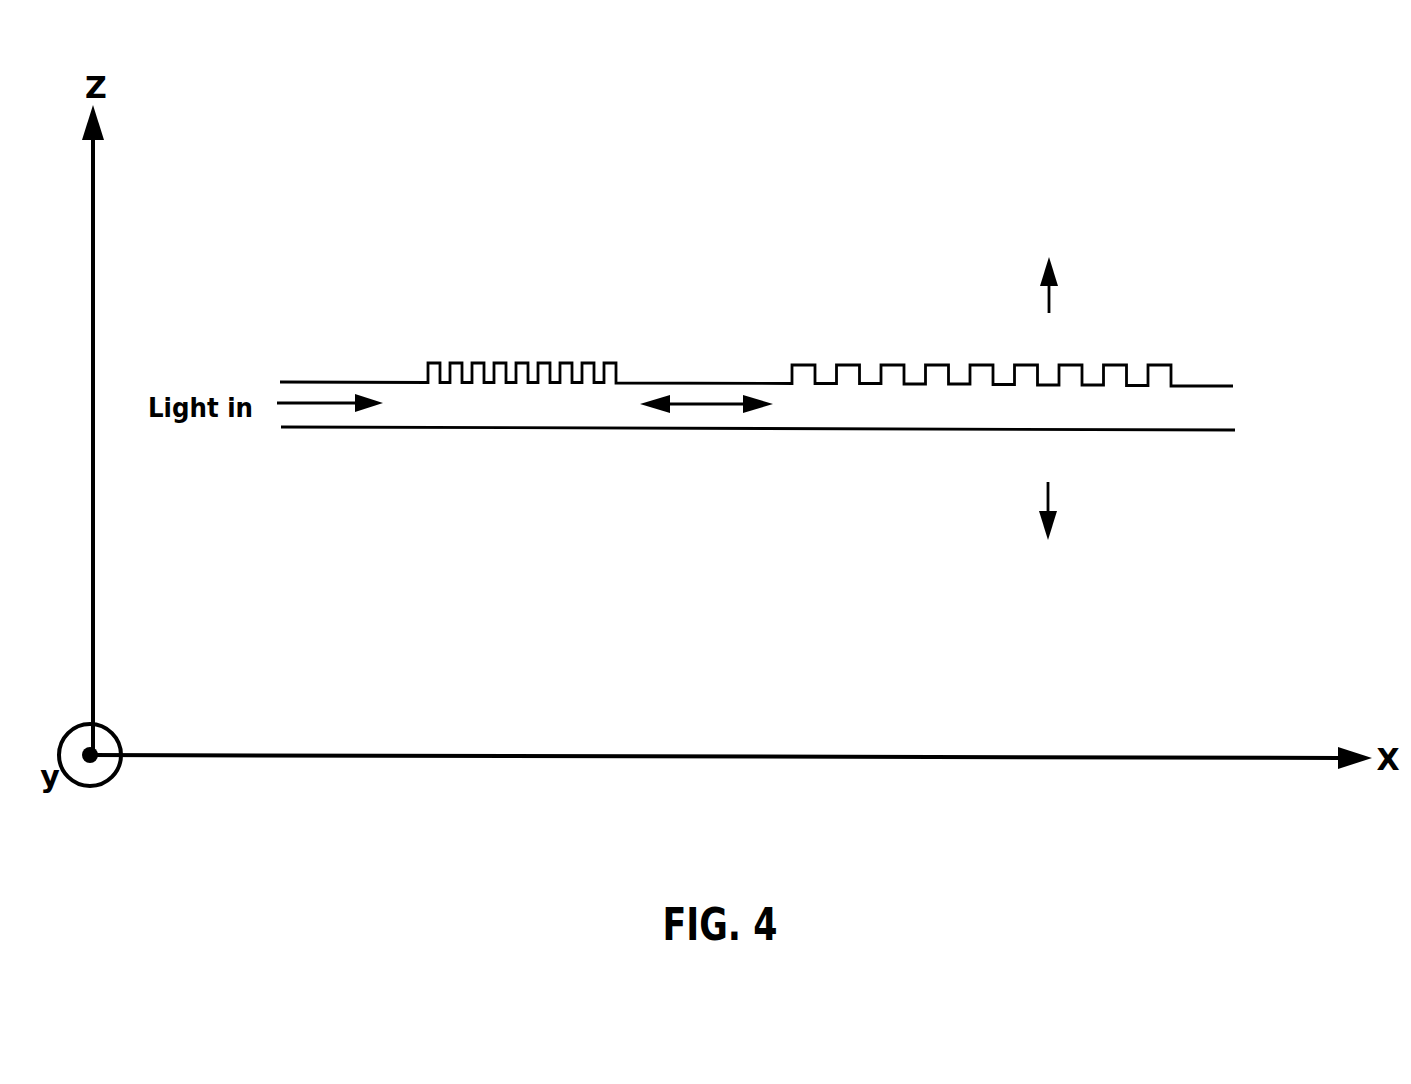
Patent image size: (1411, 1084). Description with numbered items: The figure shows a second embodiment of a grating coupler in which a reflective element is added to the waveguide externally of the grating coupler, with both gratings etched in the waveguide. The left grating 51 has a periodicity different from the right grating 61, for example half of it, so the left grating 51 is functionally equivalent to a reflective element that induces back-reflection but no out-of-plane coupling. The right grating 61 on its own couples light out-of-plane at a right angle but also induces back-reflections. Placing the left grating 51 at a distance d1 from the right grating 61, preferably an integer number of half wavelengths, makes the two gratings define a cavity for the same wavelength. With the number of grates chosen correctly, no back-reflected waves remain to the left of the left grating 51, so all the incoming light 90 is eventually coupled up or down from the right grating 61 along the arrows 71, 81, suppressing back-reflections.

The left grating 51 is at (425, 358).
The right grating 61 is at (1173, 359).
The upward coupling arrow 71 is at (1050, 290).
The downward coupling arrow 81 is at (1049, 503).
The incoming light 90 is at (321, 410).
The distance between gratings d1 is at (710, 403).